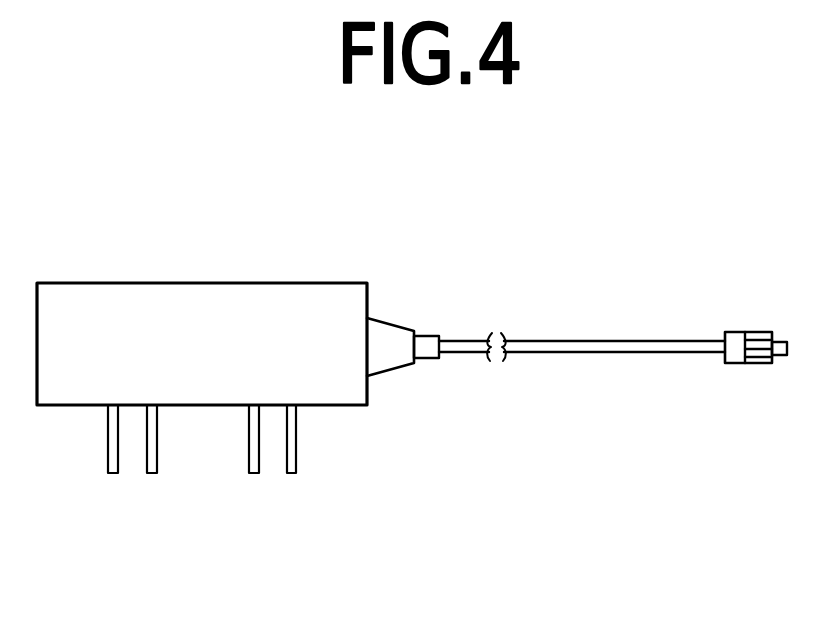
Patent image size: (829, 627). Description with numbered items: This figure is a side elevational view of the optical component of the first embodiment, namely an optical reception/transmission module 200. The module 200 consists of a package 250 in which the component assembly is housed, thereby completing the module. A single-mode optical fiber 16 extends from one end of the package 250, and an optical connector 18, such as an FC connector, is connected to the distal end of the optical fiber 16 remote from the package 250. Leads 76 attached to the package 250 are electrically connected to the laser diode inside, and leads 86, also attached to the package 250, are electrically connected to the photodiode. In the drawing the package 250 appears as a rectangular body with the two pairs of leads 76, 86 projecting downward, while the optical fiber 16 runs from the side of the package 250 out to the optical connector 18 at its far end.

The optical reception/transmission module 200 is at (270, 232).
The package 250 is at (113, 283).
The single-mode optical fiber 16 is at (607, 355).
The optical connector 18 is at (760, 332).
The leads 76 is at (156, 474).
The leads 86 is at (292, 474).